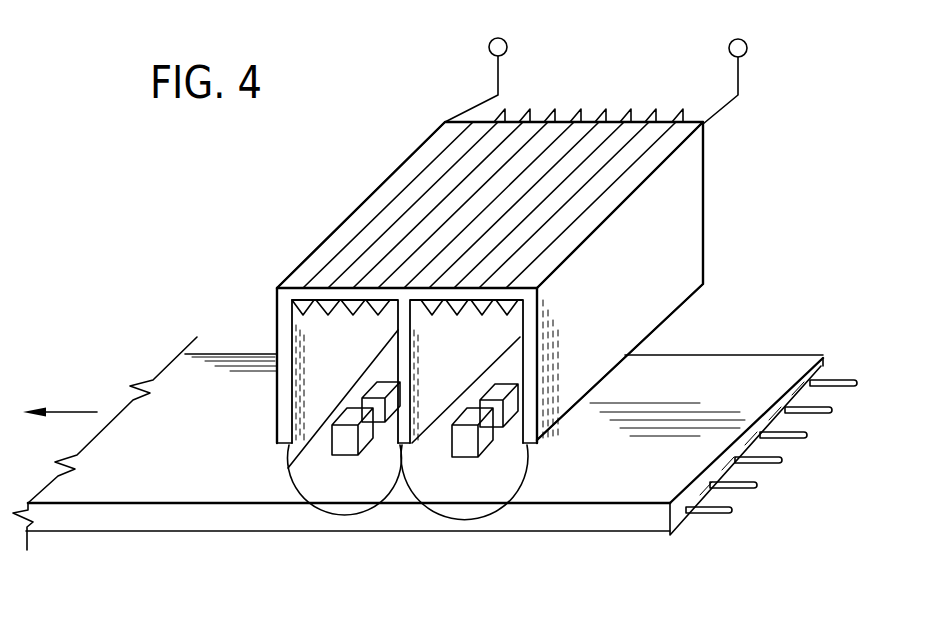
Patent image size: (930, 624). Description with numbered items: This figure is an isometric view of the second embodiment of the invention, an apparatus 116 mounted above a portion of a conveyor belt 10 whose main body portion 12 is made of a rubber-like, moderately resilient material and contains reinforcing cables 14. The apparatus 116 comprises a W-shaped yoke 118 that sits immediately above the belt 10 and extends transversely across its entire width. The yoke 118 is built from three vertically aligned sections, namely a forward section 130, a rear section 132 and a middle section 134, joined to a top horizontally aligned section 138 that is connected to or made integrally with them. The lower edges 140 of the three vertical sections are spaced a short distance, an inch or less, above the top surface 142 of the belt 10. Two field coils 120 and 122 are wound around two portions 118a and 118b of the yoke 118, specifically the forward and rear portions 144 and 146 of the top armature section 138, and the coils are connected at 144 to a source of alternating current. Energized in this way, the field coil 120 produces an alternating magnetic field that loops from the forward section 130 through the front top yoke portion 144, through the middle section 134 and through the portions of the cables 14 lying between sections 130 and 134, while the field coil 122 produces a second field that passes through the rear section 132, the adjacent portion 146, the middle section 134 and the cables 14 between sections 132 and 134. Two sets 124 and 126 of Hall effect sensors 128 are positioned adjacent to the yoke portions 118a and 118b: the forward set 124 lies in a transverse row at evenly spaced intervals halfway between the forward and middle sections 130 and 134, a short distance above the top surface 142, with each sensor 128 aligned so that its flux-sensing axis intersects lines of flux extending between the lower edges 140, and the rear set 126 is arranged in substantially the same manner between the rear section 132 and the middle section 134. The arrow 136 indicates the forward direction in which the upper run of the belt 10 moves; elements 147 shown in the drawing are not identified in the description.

The conveyor belt 10 is at (778, 348).
The main body portion 12 is at (798, 363).
The cables 14 is at (795, 370).
The apparatus of the second embodiment 116 is at (608, 95).
The W shaped yoke 118 is at (683, 213).
The yoke portion 118a is at (362, 212).
The yoke portion 118b is at (613, 172).
The field coil 120 is at (388, 200).
The field coil 122 is at (570, 200).
The forward set of Hall effect sensors 124 is at (316, 436).
The rear set of Hall effect sensors 126 is at (509, 446).
The Hall effect sensors 128 is at (335, 406).
The forward section 130 is at (328, 408).
The rear section 132 is at (678, 277).
The middle section 134 is at (398, 333).
The arrow 136 is at (72, 410).
The top horizontally aligned section 138 is at (560, 137).
The lower edges 140 is at (277, 445).
The top surface 142 is at (648, 461).
The forward portion of the top armature section 144 is at (428, 148).
The rear portion of the top armature section 146 is at (664, 148).
The standoffs 147 is at (489, 49).